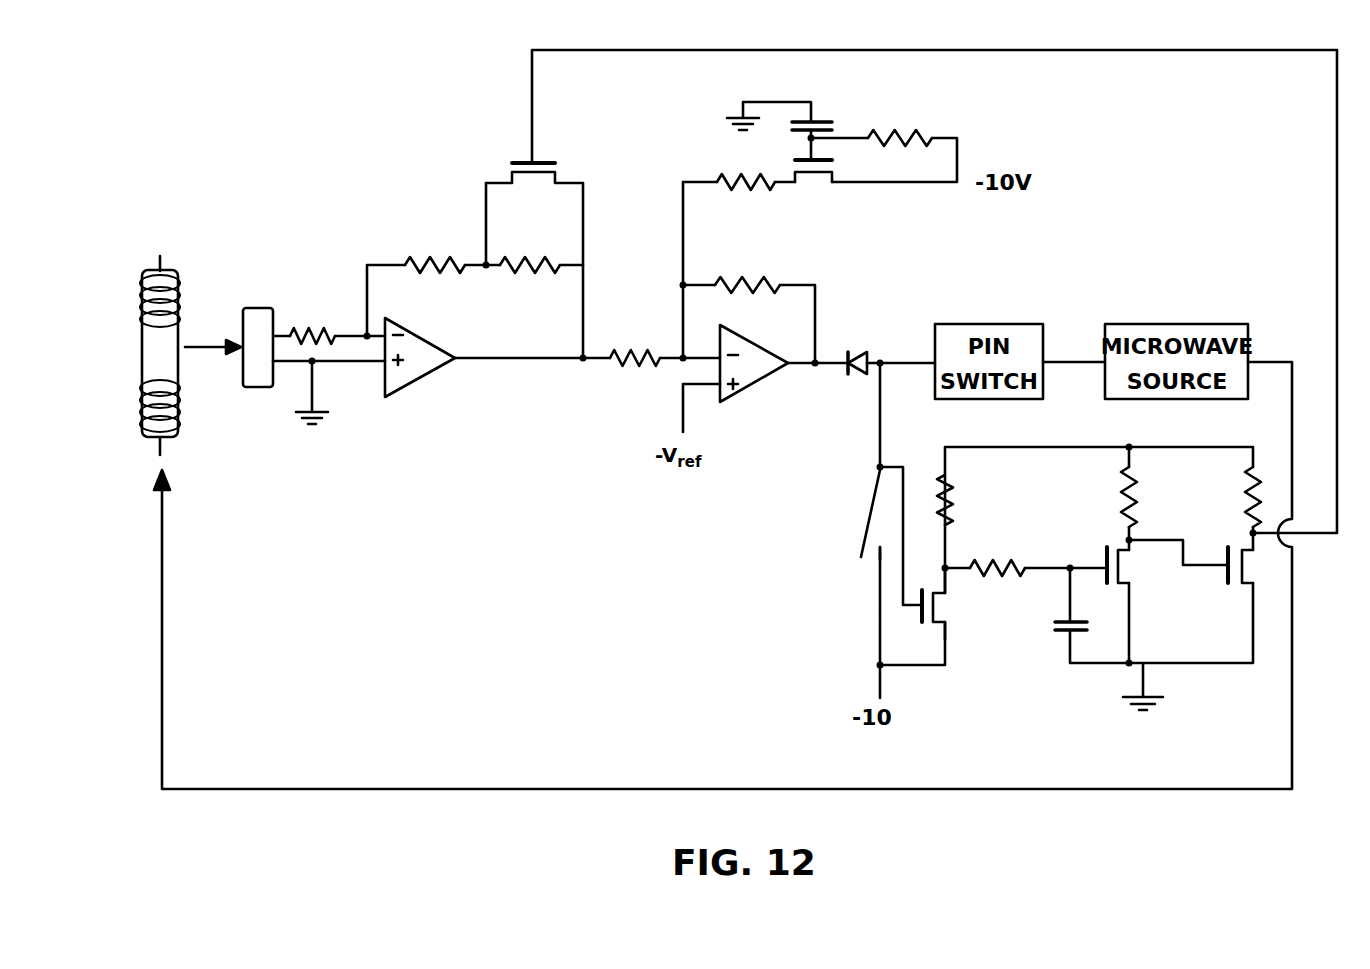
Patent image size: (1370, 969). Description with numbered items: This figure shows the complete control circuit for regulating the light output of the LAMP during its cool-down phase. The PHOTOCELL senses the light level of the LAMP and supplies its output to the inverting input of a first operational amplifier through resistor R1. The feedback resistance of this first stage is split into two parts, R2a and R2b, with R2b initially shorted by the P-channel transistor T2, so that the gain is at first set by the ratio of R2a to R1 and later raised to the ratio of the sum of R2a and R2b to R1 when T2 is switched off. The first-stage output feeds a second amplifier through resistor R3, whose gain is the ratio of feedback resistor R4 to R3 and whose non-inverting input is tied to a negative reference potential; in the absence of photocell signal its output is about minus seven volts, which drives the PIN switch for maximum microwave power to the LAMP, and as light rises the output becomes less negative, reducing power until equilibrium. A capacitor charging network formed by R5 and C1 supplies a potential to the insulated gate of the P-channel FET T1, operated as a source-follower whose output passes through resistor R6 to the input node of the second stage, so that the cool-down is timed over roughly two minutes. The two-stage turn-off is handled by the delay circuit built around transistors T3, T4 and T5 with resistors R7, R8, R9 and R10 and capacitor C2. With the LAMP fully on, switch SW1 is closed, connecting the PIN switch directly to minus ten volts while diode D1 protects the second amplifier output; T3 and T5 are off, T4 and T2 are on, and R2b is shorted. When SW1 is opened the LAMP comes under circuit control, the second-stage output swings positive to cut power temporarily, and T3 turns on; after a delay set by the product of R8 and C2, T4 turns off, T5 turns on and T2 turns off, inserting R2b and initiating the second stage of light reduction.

The lamp LAMP is at (147, 374).
The photocell PHOTOCELL is at (281, 297).
The resistor R1 is at (312, 325).
The resistor R2a is at (435, 253).
The resistor R2b is at (530, 253).
The resistor R3 is at (635, 345).
The resistor R4 is at (747, 272).
The resistor R5 is at (900, 127).
The resistor R6 is at (746, 169).
The resistor R7 is at (963, 500).
The resistor R8 is at (997, 557).
The resistor R9 is at (1145, 497).
The resistor R10 is at (1233, 498).
The P-channel FET T1 is at (801, 160).
The P-channel transistor T2 is at (534, 204).
The transistor T3 is at (951, 604).
The transistor T4 is at (1135, 573).
The transistor T5 is at (1253, 573).
The capacitor C1 is at (818, 109).
The capacitor C2 is at (1056, 645).
The diode D1 is at (862, 351).
The switch SW1 is at (846, 515).